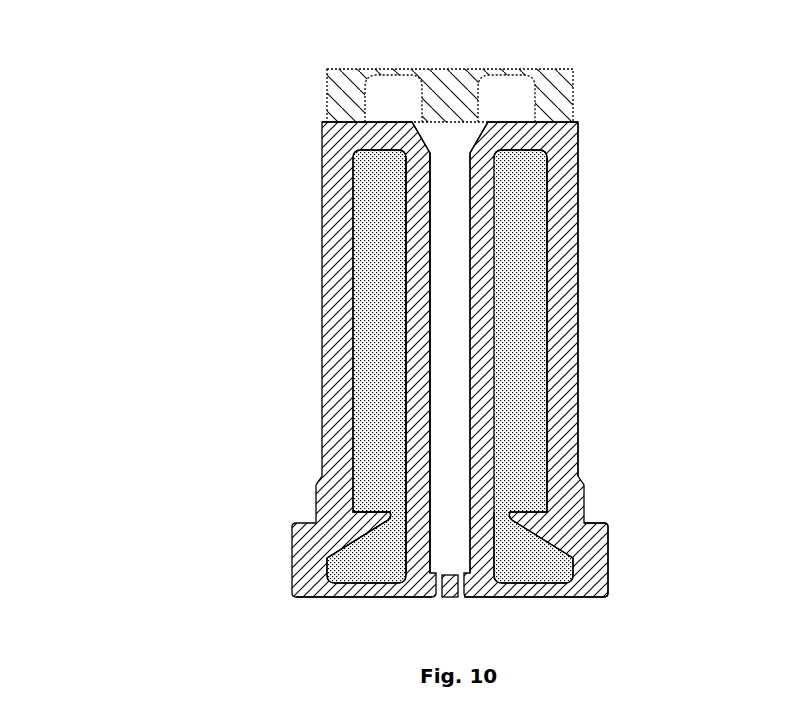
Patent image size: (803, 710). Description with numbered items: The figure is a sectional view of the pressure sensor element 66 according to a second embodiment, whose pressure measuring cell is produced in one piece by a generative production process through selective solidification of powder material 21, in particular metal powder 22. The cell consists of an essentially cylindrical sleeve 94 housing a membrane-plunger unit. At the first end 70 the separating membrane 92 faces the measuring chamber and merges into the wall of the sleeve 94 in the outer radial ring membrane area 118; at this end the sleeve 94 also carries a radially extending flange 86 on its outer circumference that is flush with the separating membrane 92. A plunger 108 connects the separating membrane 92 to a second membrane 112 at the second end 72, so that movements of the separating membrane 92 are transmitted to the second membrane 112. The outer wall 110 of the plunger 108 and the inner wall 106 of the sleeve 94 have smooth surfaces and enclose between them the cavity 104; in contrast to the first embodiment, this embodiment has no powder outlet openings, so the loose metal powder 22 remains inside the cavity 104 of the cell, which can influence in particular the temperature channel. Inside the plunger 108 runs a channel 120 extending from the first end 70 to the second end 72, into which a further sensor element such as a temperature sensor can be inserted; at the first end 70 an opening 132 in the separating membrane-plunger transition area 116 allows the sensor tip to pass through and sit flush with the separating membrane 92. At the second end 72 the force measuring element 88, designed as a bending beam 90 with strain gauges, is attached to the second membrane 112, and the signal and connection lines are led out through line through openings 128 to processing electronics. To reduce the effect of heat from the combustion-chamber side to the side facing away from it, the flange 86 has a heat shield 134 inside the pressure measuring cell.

The pressure sensor element 66 is at (105, 130).
The second end 72 is at (255, 101).
The first end 70 is at (243, 589).
The bending beam 90 is at (565, 75).
The force measuring element 88 is at (440, 84).
The second membrane 112 is at (378, 134).
The line through openings 128 is at (455, 142).
The outer wall of the plunger 110 is at (403, 278).
The sleeve 94 is at (558, 256).
The channel 120 is at (455, 318).
The metal powder 22 is at (515, 318).
The plunger 108 is at (413, 378).
The inner wall of the sleeve 106 is at (555, 362).
The cavity 104 is at (370, 467).
The powder material 21 is at (515, 470).
The separating membrane-plunger transition area 116 is at (418, 585).
The heat shield 134 is at (552, 567).
The flange 86 is at (592, 543).
The ring membrane area 118 is at (583, 584).
The separating membrane 92 is at (367, 596).
The opening 132 is at (457, 590).